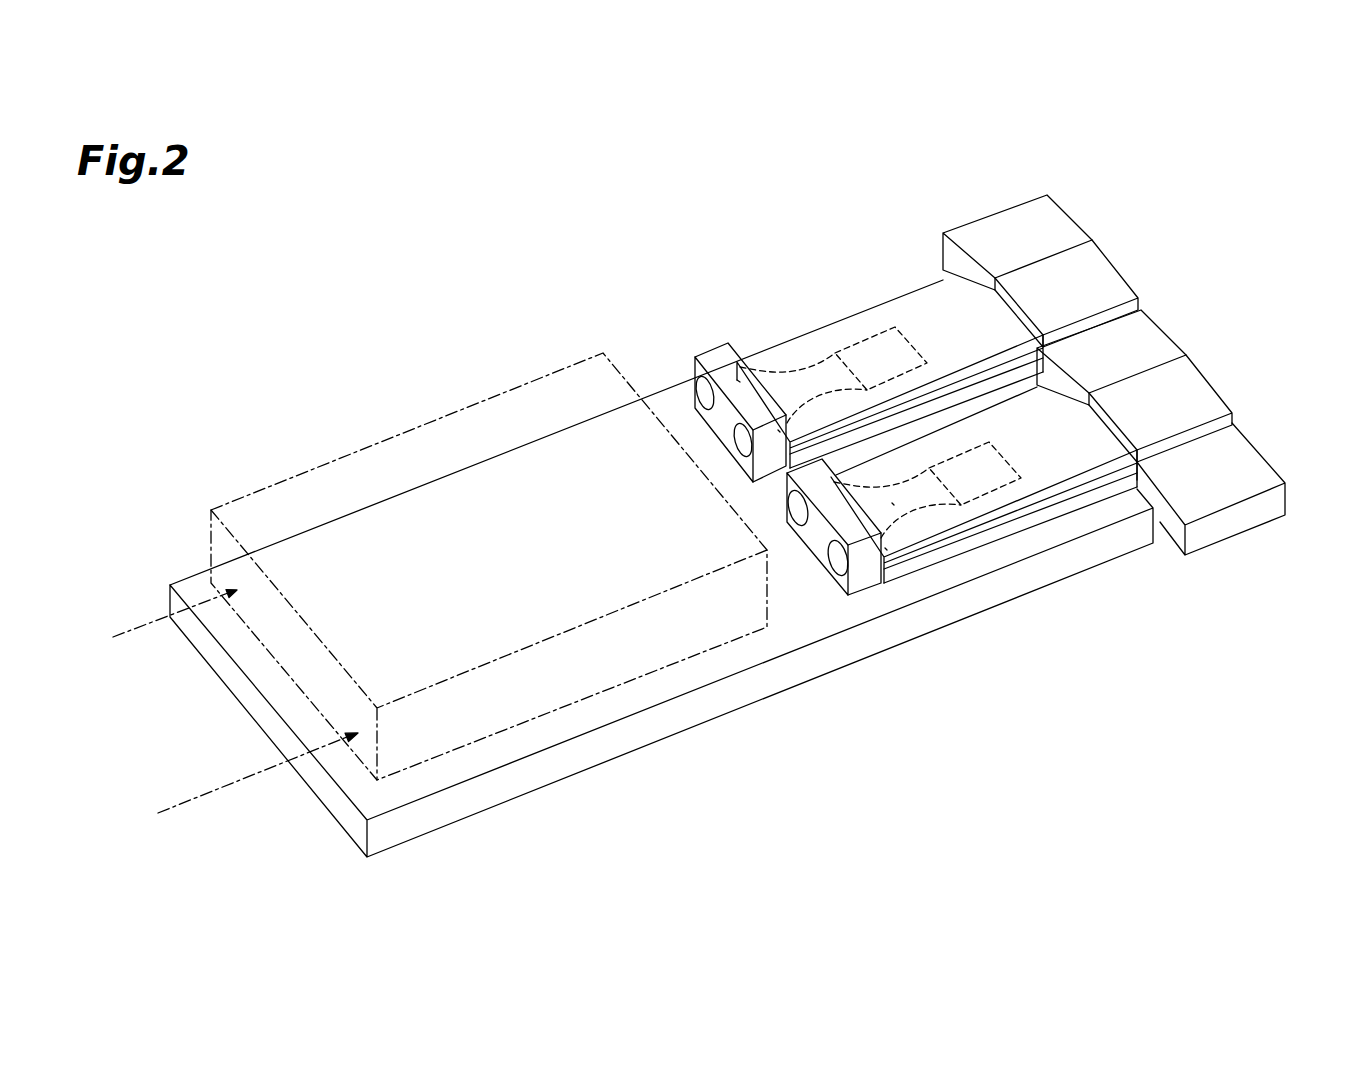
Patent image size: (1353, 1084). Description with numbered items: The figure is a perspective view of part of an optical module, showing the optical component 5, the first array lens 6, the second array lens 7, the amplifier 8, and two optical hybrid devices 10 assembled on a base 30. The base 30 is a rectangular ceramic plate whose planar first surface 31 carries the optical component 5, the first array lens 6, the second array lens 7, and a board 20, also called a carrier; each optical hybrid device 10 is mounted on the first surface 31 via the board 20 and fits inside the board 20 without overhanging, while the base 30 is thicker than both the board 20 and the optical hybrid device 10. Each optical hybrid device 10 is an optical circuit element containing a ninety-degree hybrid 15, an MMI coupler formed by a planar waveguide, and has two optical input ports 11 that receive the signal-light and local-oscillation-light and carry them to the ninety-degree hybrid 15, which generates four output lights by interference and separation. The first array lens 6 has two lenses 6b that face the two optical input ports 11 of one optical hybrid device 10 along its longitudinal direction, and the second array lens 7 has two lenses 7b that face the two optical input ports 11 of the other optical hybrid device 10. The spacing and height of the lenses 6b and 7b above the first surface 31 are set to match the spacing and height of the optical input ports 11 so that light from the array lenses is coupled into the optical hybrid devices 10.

The optical component 5 is at (447, 412).
The first array lens 6 is at (717, 362).
The lenses 6b is at (743, 439).
The second array lens 7 is at (867, 592).
The lenses 7b is at (797, 518).
The amplifier 8 is at (1100, 275).
The optical hybrid device 10 is at (882, 320).
The optical input ports 11 is at (778, 430).
The 90-degree hybrid 15 is at (866, 345).
The board 20 is at (1073, 498).
The base 30 is at (1129, 537).
The first surface 31 is at (1125, 507).